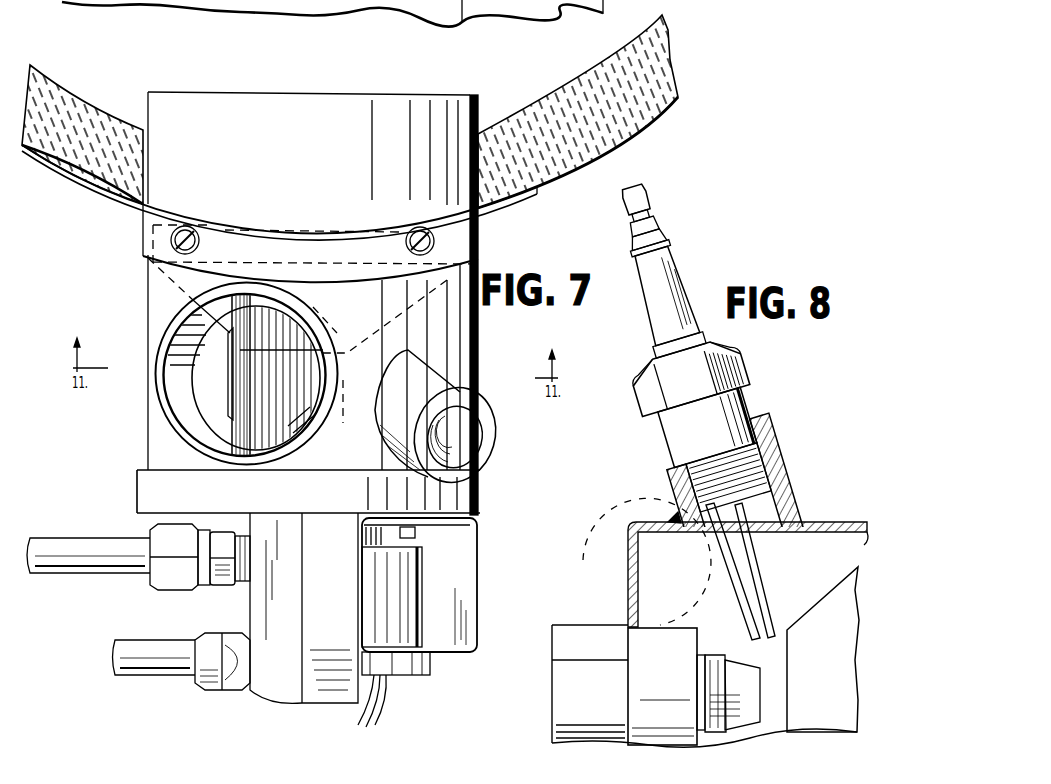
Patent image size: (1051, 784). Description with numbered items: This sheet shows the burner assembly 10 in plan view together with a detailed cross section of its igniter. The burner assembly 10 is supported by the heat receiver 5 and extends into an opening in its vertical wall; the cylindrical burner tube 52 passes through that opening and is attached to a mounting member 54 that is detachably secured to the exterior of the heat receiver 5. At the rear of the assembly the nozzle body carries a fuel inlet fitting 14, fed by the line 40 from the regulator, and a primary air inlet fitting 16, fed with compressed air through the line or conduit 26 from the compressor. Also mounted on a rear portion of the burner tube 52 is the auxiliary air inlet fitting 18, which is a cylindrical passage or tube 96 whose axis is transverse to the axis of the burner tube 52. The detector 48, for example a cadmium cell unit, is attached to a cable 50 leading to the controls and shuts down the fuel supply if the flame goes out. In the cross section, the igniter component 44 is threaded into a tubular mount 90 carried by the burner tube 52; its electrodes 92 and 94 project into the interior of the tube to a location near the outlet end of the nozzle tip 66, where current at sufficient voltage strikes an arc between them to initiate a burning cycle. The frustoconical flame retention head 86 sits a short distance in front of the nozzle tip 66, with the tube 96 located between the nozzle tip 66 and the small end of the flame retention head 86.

In FIG. 7, the heat receiver 5 is at (462, 23).
In FIG. 7, the burner assembly 10 is at (300, 708).
In FIG. 7, the fuel inlet fitting 14 is at (208, 690).
In FIG. 7, the primary air inlet fitting 16 is at (225, 588).
In FIG. 7, the auxiliary air inlet fitting 18 is at (155, 411).
In FIG. 7, the line or conduit 26 is at (80, 580).
In FIG. 7, the line 40 is at (155, 683).
In FIG. 8, the igniter component 44 is at (752, 410).
In FIG. 7, the detector 48 is at (418, 602).
In FIG. 7, the cable 50 is at (383, 700).
In FIG. 7, the burner tube 52 is at (148, 312).
In FIG. 8, the burner tube 52 is at (838, 528).
In FIG. 7, the mounting member 54 is at (112, 194).
In FIG. 8, the nozzle tip 66 is at (746, 665).
In FIG. 8, the flame retention head 86 is at (840, 668).
In FIG. 7, the tubular mount 90 is at (455, 390).
In FIG. 8, the tubular mount 90 is at (782, 508).
In FIG. 8, the electrode 92 is at (733, 574).
In FIG. 8, the electrode 94 is at (753, 574).
In FIG. 7, the cylindrical passage or tube 96 is at (310, 438).